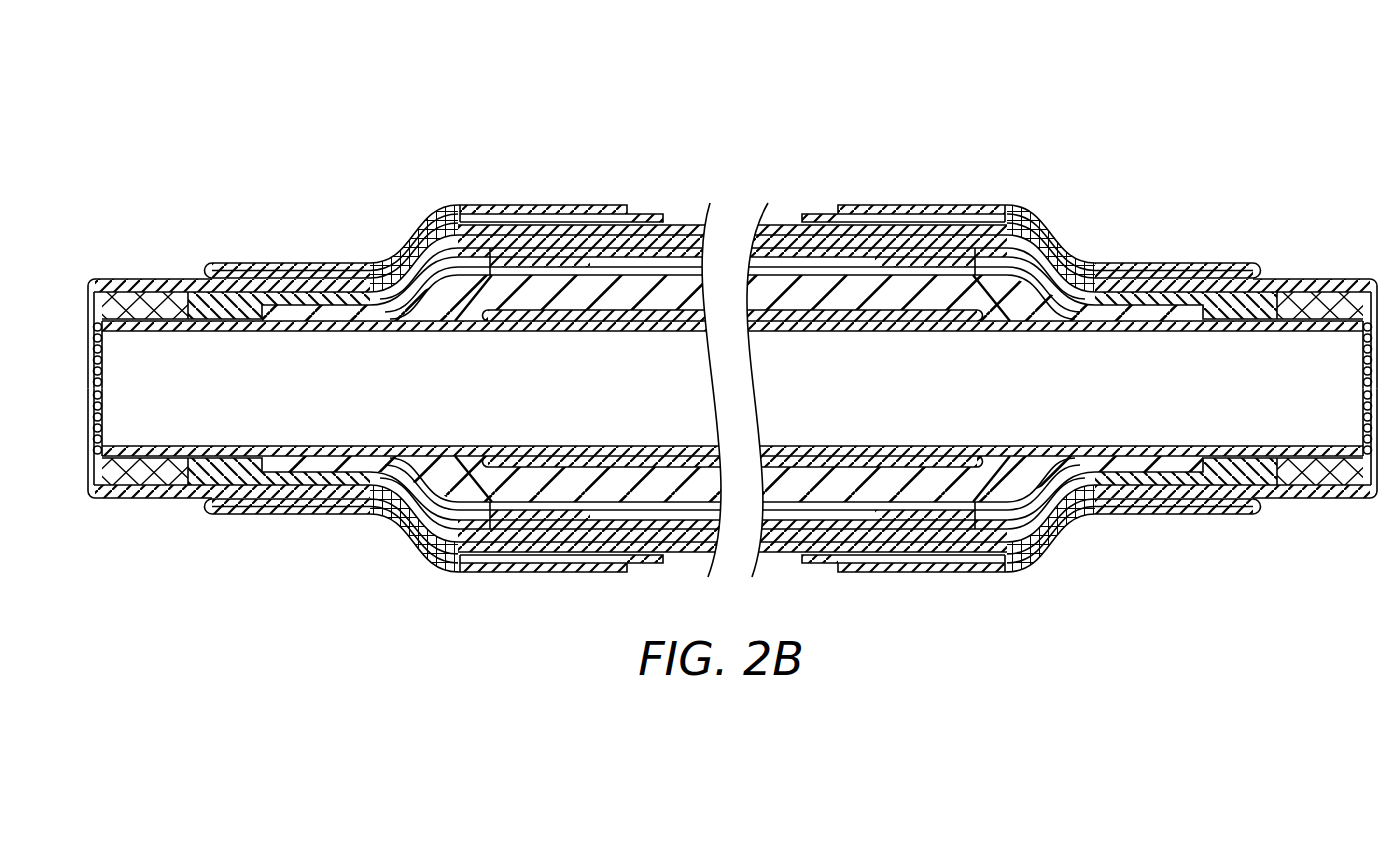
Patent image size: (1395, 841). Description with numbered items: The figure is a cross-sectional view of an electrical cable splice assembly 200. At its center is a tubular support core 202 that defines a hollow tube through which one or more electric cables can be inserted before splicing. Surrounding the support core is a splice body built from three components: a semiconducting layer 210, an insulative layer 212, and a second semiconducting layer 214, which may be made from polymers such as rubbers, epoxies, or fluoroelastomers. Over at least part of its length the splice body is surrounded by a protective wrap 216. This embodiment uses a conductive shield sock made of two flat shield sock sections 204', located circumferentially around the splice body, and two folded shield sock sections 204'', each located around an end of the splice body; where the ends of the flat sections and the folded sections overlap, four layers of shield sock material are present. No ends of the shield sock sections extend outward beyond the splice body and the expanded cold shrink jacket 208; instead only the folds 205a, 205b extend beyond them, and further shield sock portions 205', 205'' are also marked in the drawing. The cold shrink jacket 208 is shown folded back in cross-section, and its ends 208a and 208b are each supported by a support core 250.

The cable splice assembly 200 is at (272, 92).
The tubular support core 202 is at (1098, 321).
The flat shield sock sections 204' is at (732, 347).
The folded shield sock sections 204'' is at (725, 351).
The fold 205a is at (88, 300).
The fold 205b is at (1377, 305).
The braid portion 205' is at (724, 383).
The braid layer 205'' is at (683, 336).
The cold shrink jacket 208 is at (1013, 210).
The end of cold shrink jacket 208a is at (597, 225).
The end of cold shrink jacket 208b is at (897, 225).
The semiconducting layer 210 is at (236, 302).
The insulative layer 212 is at (437, 302).
The second semiconducting layer 214 is at (563, 310).
The protective wrap 216 is at (768, 262).
The support core 250 is at (512, 210).